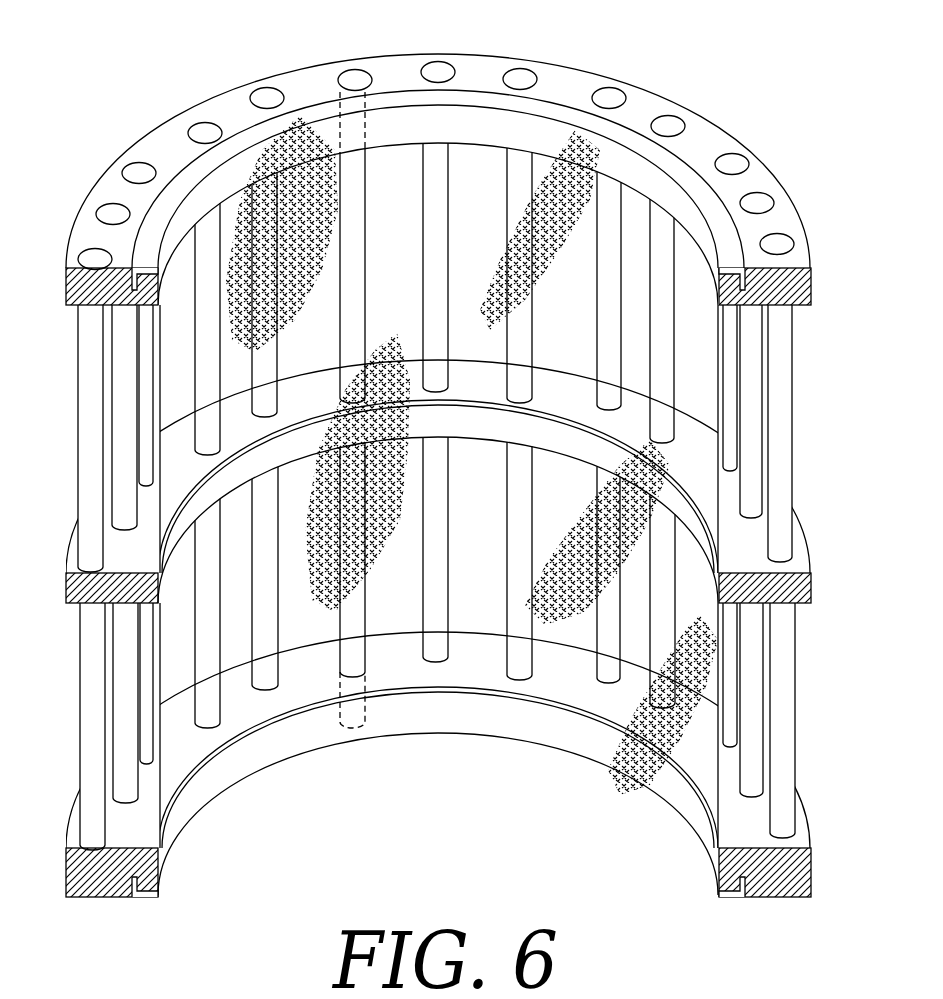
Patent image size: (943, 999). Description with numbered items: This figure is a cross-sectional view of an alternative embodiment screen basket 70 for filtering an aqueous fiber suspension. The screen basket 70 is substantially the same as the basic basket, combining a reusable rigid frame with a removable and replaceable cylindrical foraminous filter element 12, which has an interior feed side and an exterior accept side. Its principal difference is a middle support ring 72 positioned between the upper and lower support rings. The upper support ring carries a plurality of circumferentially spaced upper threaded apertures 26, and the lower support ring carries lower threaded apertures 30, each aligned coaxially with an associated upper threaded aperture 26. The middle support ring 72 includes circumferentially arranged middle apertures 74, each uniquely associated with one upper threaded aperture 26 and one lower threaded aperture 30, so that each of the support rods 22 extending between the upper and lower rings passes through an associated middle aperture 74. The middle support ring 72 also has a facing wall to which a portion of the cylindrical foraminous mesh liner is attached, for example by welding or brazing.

The screen basket 70 is at (771, 114).
The cylindrical foraminous filter element 12 is at (562, 197).
The support rods 22 is at (86, 373).
The upper threaded apertures 26 is at (354, 80).
The middle support ring 72 is at (68, 592).
The middle apertures 74 is at (375, 355).
The lower threaded apertures 30 is at (363, 715).